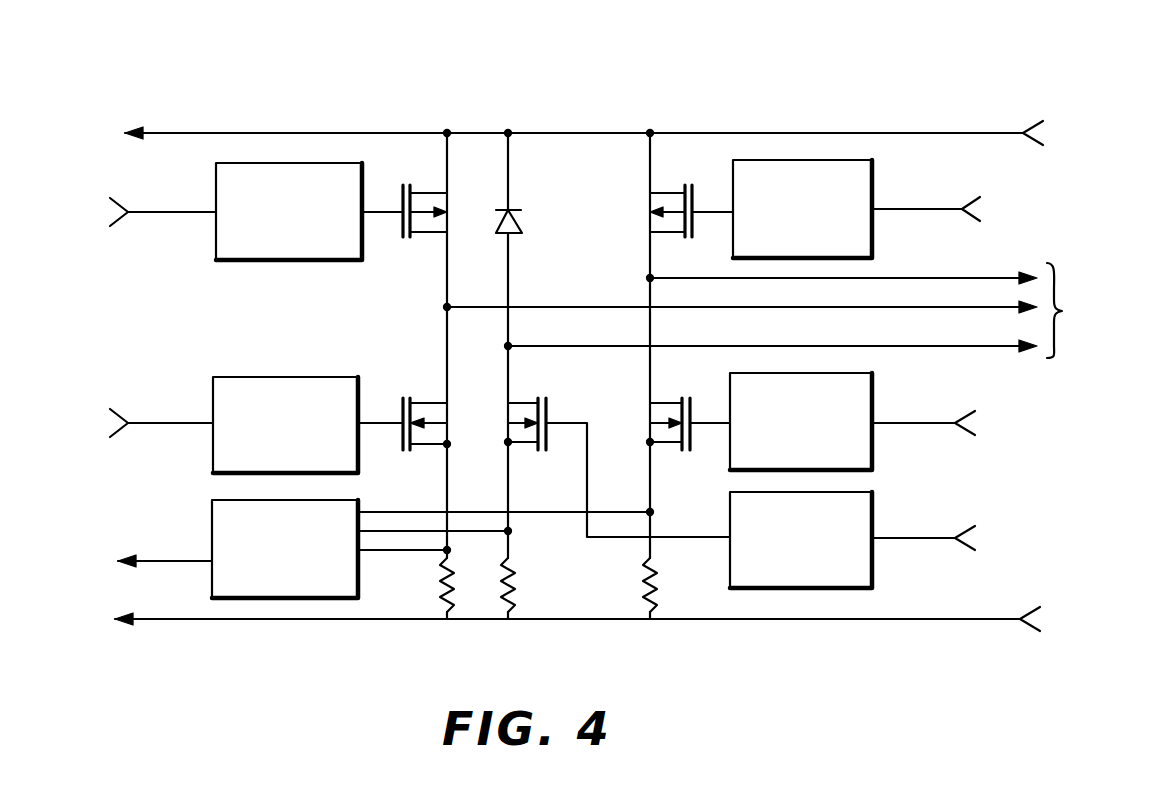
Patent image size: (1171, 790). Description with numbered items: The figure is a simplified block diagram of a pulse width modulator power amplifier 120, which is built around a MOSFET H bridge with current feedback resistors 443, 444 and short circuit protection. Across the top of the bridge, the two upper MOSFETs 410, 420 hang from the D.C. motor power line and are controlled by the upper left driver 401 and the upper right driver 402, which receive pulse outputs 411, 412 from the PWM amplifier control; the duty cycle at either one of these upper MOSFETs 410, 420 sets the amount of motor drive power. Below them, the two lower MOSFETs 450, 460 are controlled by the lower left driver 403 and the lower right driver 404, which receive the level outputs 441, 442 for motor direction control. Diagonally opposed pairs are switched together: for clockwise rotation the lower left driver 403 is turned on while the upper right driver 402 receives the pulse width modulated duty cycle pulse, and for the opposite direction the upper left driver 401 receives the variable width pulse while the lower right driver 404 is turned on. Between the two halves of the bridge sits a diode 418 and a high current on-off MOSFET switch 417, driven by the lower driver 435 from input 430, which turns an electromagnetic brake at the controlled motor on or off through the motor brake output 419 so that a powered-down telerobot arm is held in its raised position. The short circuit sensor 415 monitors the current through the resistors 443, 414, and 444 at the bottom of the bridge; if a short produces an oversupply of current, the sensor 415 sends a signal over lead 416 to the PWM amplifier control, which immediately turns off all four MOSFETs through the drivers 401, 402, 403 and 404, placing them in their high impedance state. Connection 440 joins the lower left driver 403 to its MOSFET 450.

The PWM power amplifier 120 is at (600, 128).
The upper left driver 401 is at (216, 237).
The upper right driver 402 is at (872, 243).
The lower left driver 403 is at (213, 387).
The lower right driver 404 is at (872, 403).
The upper MOSFET 410 is at (406, 190).
The pulse output 411 is at (168, 211).
The pulse output 412 is at (924, 208).
The resistor 414 is at (501, 578).
The short circuit sensor 415 is at (212, 525).
The short circuit sensor input lead 416 is at (178, 562).
The MOSFET switch 417 is at (530, 403).
The diode 418 is at (522, 225).
The motor brake line 419 is at (991, 345).
The upper MOSFET 420 is at (700, 190).
The lower driver input 430 is at (928, 541).
The lower driver 435 is at (872, 532).
The lower driver output line 440 is at (362, 385).
The level output 441 is at (168, 426).
The level output 442 is at (928, 426).
The current feedback resistor 443 is at (440, 578).
The current feedback resistor 444 is at (643, 578).
The lower MOSFET 450 is at (412, 398).
The lower MOSFET 460 is at (700, 380).